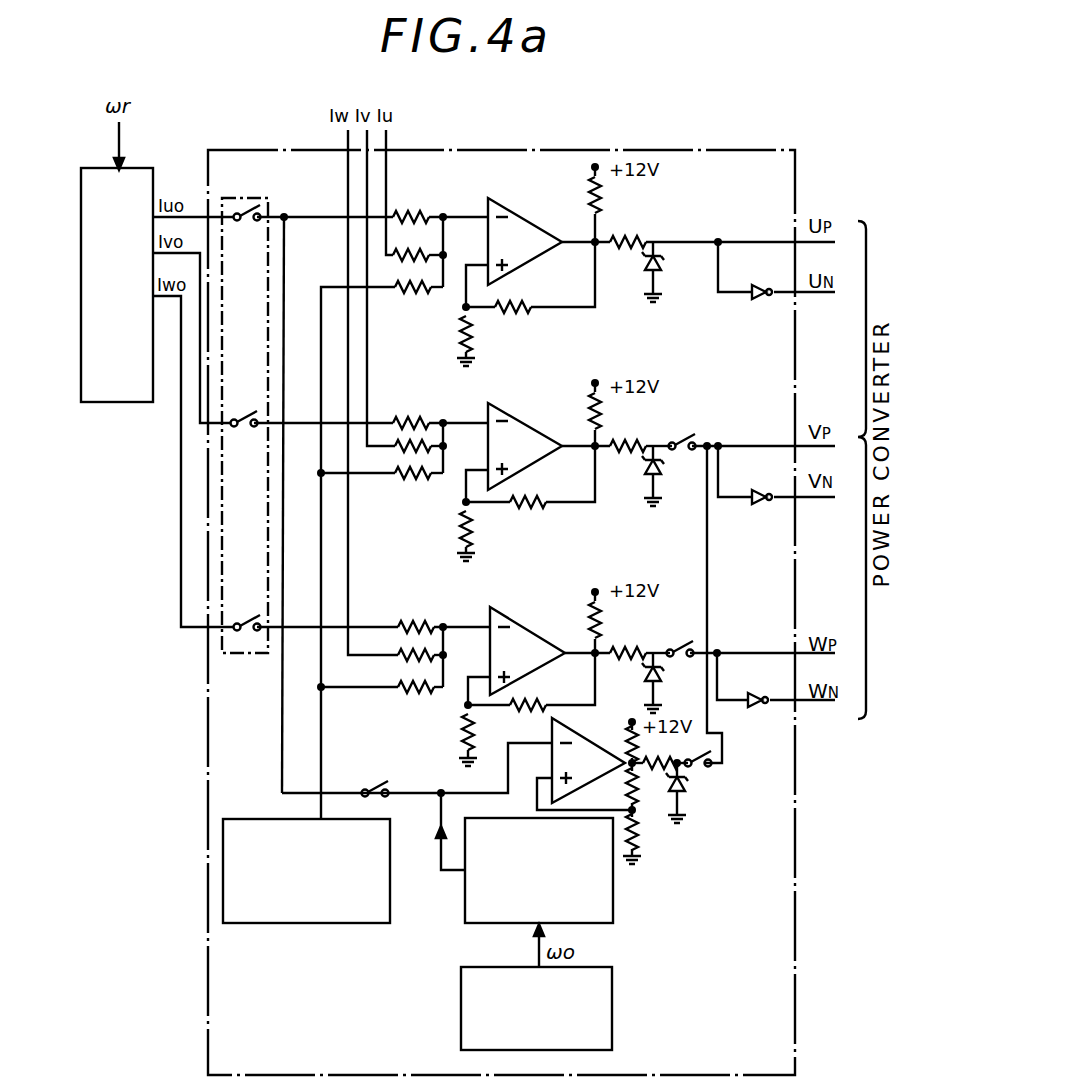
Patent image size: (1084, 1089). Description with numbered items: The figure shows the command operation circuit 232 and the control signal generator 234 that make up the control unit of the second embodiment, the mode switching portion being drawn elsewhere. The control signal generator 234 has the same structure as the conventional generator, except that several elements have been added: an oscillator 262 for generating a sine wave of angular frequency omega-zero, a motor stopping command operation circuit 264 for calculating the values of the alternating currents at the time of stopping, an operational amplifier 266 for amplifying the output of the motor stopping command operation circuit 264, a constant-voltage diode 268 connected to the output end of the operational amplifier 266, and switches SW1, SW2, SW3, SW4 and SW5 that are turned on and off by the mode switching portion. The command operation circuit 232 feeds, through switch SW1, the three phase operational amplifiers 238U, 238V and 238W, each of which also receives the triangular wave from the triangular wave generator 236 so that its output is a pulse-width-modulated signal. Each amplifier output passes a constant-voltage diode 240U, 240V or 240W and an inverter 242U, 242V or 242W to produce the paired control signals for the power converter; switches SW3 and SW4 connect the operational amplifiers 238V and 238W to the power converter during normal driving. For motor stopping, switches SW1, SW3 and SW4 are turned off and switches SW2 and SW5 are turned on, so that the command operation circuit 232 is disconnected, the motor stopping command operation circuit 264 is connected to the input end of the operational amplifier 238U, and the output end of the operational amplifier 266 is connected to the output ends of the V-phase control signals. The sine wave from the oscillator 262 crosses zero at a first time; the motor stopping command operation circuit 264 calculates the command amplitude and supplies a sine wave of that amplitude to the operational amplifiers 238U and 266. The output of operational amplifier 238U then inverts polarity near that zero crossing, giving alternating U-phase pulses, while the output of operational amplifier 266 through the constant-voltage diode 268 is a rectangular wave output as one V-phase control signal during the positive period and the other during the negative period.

The command operation circuit 232 is at (92, 404).
The control signal generator 234 is at (208, 765).
The triangular wave generator 236 is at (390, 867).
The operational amplifier 238U is at (531, 220).
The operational amplifier 238V is at (523, 426).
The operational amplifier 238W is at (518, 614).
The constant-voltage diode 240U is at (664, 270).
The constant-voltage diode 240V is at (660, 478).
The constant-voltage diode 240W is at (652, 676).
The inverter 242U is at (759, 300).
The inverter 242V is at (754, 495).
The inverter 242W is at (758, 693).
The oscillator 262 is at (612, 995).
The motor stopping command operation circuit 264 is at (614, 873).
The operational amplifier 266 is at (552, 728).
The constant-voltage diode 268 is at (684, 804).
The switch SW1 is at (228, 192).
The switch SW2 is at (379, 790).
The switch SW3 is at (681, 439).
The switch SW4 is at (663, 635).
The switch SW5 is at (710, 774).